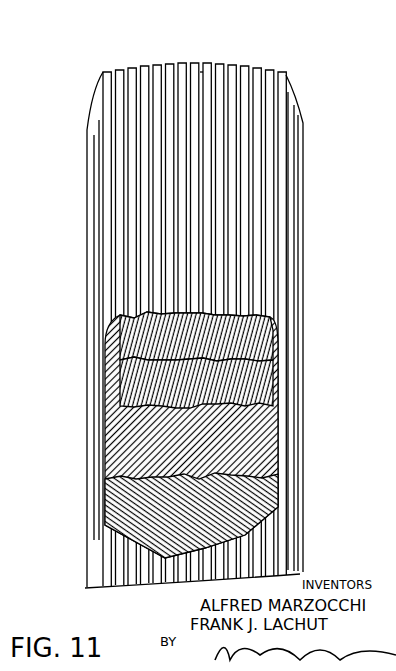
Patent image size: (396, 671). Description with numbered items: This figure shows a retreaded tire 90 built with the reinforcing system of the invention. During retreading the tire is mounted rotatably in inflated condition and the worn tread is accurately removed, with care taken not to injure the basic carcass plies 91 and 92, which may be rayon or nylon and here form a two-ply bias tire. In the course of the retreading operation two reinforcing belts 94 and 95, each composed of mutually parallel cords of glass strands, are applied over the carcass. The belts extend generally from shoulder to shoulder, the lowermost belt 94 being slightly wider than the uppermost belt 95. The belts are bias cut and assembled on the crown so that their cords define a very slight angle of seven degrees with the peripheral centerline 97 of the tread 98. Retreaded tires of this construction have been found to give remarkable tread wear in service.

The tire 90 is at (328, 167).
The carcass ply 91 is at (237, 452).
The carcass ply 92 is at (223, 517).
The reinforcing belt 94 is at (248, 378).
The reinforcing belt 95 is at (247, 343).
The peripheral centerline 97 is at (195, 66).
The tread 98 is at (262, 70).